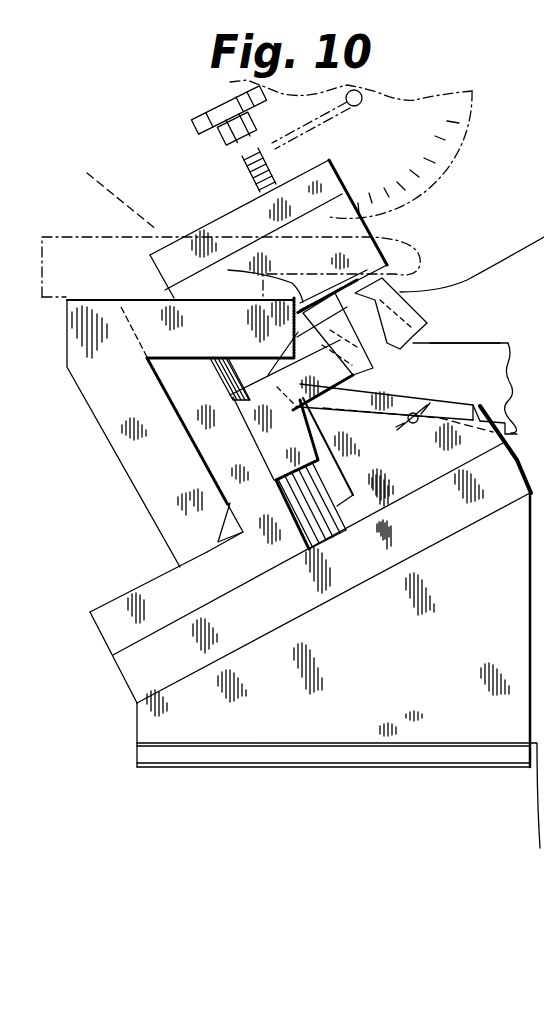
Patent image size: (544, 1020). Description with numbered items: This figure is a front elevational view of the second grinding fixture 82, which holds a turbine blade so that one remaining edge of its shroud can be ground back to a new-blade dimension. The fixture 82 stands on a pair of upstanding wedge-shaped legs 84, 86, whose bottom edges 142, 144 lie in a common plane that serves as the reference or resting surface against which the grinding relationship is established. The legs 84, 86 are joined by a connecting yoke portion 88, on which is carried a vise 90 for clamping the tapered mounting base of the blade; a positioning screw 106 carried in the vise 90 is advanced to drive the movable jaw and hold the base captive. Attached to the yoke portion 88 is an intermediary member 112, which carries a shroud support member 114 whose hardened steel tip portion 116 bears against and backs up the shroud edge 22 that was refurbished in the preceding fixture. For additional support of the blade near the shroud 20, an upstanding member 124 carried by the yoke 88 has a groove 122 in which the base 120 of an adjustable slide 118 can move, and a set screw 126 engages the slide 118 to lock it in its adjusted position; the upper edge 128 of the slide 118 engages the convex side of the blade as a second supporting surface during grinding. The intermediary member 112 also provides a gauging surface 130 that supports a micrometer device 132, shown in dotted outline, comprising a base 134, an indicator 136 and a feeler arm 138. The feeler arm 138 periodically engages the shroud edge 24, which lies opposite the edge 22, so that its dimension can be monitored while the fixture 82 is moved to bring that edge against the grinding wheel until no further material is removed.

The shroud 20 is at (386, 269).
The edge portion 22 is at (268, 369).
The edge portion 24 is at (410, 305).
The second fixture 82 is at (127, 777).
The leg 84 is at (272, 717).
The leg 86 is at (475, 754).
The yoke portion 88 is at (162, 671).
The vise 90 is at (207, 218).
The positioning screw 106 is at (245, 177).
The intermediary member 112 is at (226, 465).
The shroud support member 114 is at (257, 424).
The tip portion 116 is at (358, 381).
The adjustable slide 118 is at (482, 358).
The base 120 is at (483, 420).
The groove 122 is at (530, 420).
The upstanding member 124 is at (430, 467).
The set screw 126 is at (415, 427).
The upper edge 128 is at (478, 331).
The gauging surface 130 is at (116, 295).
The micrometer device 132 is at (452, 185).
The base 134 is at (120, 241).
The indicator 136 is at (437, 160).
The feeler arm 138 is at (342, 260).
The bottom edge 142 is at (342, 744).
The bottom edge 144 is at (418, 763).